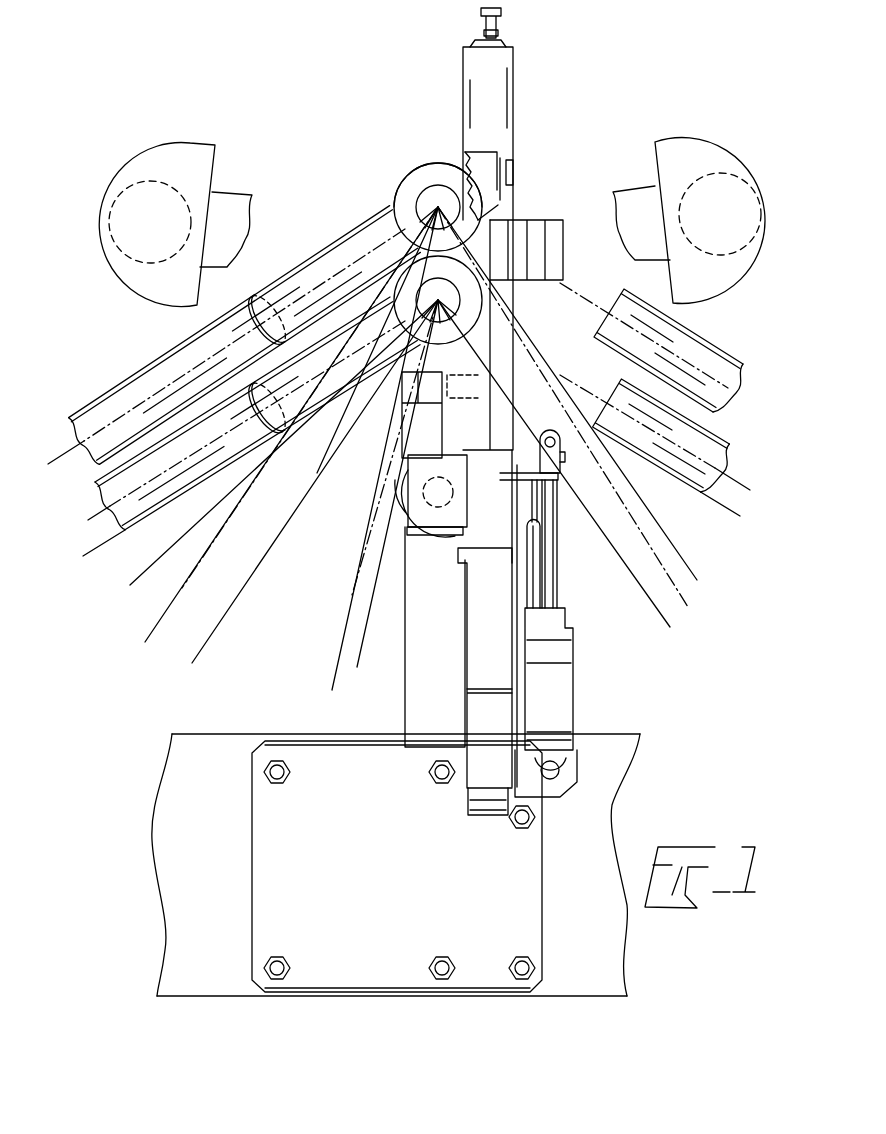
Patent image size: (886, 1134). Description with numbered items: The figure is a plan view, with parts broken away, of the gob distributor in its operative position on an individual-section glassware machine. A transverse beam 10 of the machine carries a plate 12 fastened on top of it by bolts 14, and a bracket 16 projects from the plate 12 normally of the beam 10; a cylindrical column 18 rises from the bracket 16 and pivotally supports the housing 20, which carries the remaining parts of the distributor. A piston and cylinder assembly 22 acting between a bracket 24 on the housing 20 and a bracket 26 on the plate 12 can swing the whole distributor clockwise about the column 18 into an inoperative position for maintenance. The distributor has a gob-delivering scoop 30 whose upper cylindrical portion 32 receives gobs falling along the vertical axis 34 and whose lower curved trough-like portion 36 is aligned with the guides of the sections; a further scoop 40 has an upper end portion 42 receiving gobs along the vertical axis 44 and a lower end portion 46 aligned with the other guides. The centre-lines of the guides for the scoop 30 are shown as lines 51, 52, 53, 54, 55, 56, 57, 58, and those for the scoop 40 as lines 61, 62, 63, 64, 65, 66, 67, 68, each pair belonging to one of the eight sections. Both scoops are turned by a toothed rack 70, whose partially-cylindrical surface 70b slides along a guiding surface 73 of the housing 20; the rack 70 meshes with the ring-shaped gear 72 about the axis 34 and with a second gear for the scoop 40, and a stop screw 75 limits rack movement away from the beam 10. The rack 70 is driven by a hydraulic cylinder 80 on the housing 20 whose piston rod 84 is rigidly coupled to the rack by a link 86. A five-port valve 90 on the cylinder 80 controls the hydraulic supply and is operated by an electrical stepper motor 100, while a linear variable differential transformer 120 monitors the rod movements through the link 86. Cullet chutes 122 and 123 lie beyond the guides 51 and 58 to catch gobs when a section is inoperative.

The beam 10 is at (214, 860).
The plate 12 is at (396, 878).
The bolts 14 is at (432, 772).
The bracket 16 is at (448, 662).
The cylindrical column 18 is at (408, 512).
The housing 20 is at (405, 440).
The piston and cylinder assembly 22 is at (606, 693).
The bracket 24 is at (560, 455).
The bracket 26 is at (578, 780).
The gob-delivering scoop 30 is at (352, 218).
The upper cylindrical portion 32 is at (398, 185).
The vertical axis 34 is at (436, 205).
The lower curved trough-like portion 36 is at (258, 295).
The further scoop 40 is at (355, 395).
The upper end portion 42 is at (415, 290).
The vertical axis 44 is at (555, 282).
The lower end portion 46 is at (286, 440).
The gob-delivering guide centre-line 51 is at (85, 455).
The gob-delivering guide centre-line 52 is at (88, 550).
The gob-delivering guide centre-line 53 is at (172, 603).
The gob-delivering guide centre-line 54 is at (340, 590).
The gob-delivering guide centre-line 55 is at (545, 655).
The gob-delivering guide centre-line 56 is at (695, 578).
The gob-delivering guide centre-line 57 is at (730, 465).
The gob-delivering guide centre-line 58 is at (725, 360).
The gob-delivering guide centre-line 61 is at (98, 518).
The gob-delivering guide centre-line 62 is at (172, 542).
The gob-delivering guide centre-line 63 is at (250, 585).
The gob-delivering guide centre-line 64 is at (389, 590).
The gob-delivering guide centre-line 65 is at (505, 650).
The gob-delivering guide centre-line 66 is at (673, 624).
The gob-delivering guide centre-line 67 is at (706, 510).
The gob-delivering guide centre-line 68 is at (740, 488).
The toothed rack 70 is at (500, 140).
The partially-cylindrical surface 70b is at (500, 194).
The ring-shaped gear 72 is at (438, 200).
The guiding surface 73 is at (510, 172).
The stop screw 75 is at (500, 20).
The cylinder 80 is at (480, 686).
The piston rod 84 is at (455, 530).
The link 86 is at (520, 495).
The valve 90 is at (485, 738).
The electrical stepper motor 100 is at (466, 808).
The linear variable differential transformer 120 is at (548, 580).
The cullet chute 122 is at (186, 148).
The cullet chute 123 is at (684, 148).